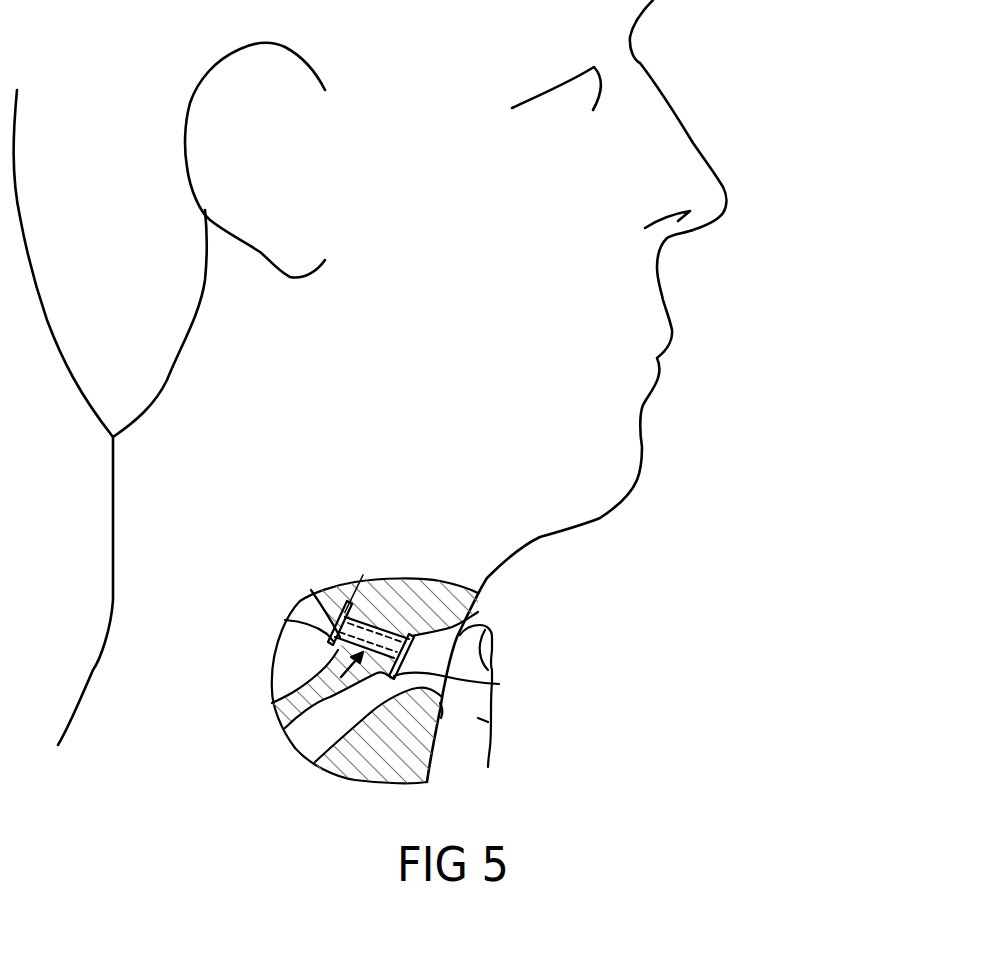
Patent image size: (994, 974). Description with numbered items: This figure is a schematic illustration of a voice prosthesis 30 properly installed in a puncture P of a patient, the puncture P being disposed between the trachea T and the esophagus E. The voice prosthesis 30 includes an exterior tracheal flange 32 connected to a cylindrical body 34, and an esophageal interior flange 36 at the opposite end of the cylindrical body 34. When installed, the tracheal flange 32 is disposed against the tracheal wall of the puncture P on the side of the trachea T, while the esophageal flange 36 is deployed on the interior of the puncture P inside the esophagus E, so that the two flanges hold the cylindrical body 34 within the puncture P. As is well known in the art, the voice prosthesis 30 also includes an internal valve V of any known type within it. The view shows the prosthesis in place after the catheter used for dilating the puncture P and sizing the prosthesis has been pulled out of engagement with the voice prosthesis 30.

The voice prosthesis 30 is at (272, 703).
The tracheal flange 32 is at (487, 684).
The cylindrical body 34 is at (478, 612).
The esophageal flange 36 is at (290, 620).
The puncture P is at (364, 633).
The internal valve V is at (311, 598).
The esophagus E is at (294, 655).
The trachea T is at (324, 727).